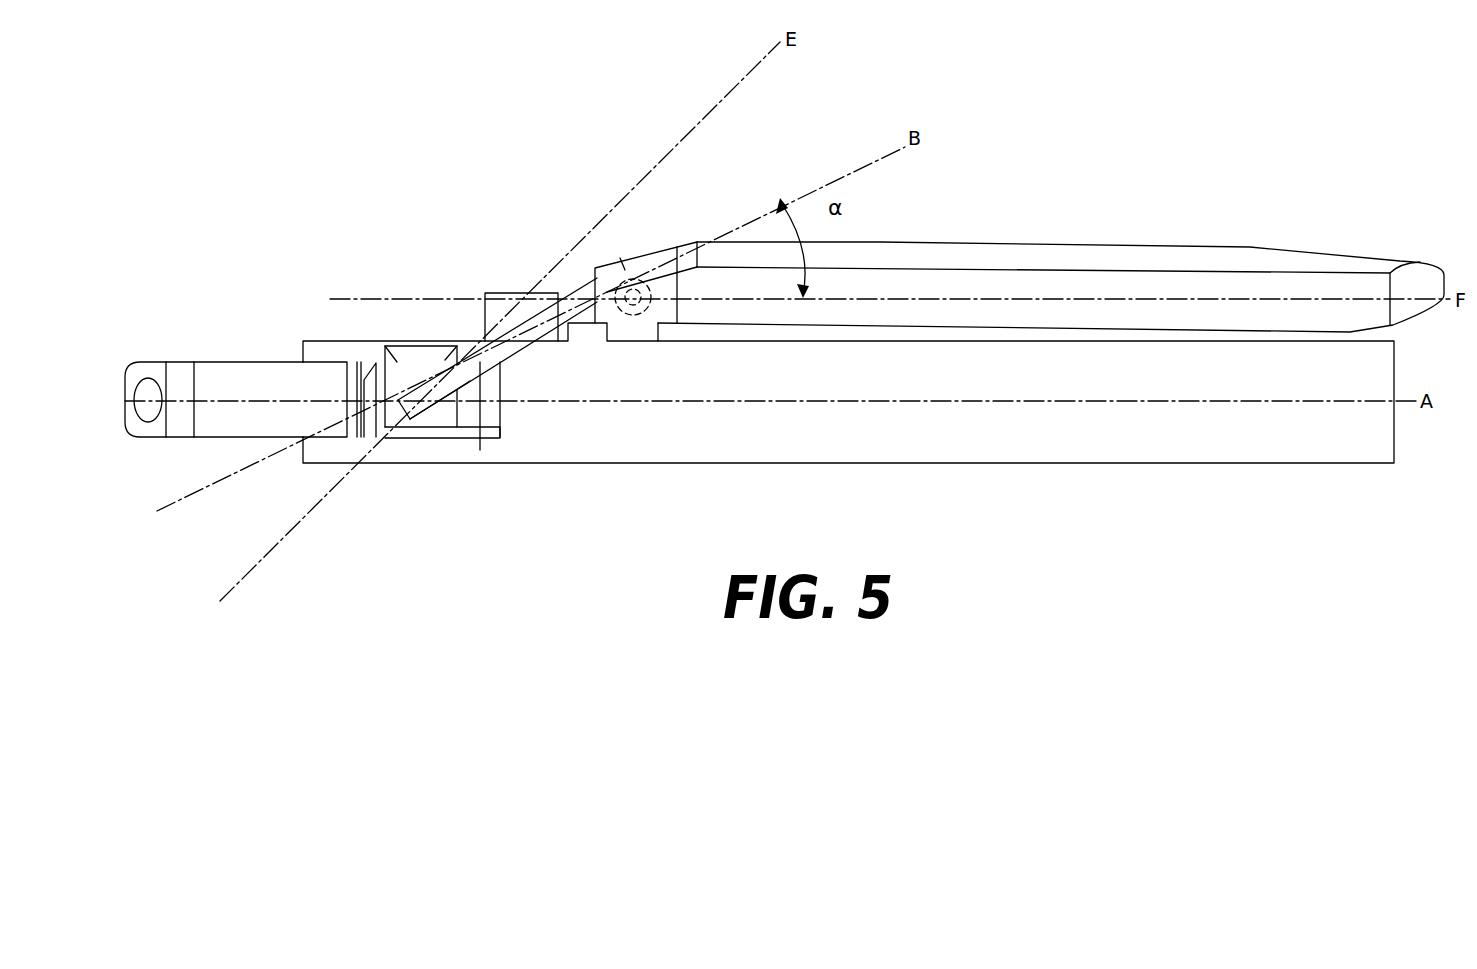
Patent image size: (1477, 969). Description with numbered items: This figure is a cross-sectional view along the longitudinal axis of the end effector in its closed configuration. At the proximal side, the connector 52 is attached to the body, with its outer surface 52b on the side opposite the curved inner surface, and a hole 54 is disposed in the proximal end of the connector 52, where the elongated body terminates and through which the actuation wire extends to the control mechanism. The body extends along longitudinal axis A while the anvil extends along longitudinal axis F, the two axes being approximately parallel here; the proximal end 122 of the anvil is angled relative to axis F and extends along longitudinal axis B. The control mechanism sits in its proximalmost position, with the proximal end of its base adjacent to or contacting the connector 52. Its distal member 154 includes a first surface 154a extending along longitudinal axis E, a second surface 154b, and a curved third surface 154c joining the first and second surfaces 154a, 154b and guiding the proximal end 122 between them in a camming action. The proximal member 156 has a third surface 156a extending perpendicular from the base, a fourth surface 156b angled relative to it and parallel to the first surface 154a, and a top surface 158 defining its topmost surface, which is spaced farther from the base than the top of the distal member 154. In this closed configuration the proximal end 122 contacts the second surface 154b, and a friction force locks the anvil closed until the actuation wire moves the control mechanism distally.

The connector 52 is at (221, 342).
The outer surface 52b is at (247, 375).
The hole 54 is at (143, 387).
The proximal end 122 is at (527, 293).
The distal member 154 is at (488, 415).
The first surface 154a is at (433, 415).
The second surface 154b is at (490, 362).
The third surface 154c is at (480, 450).
The proximal member 156 is at (392, 346).
The third surface 156a is at (400, 415).
The fourth surface 156b is at (435, 346).
The top surface 158 is at (407, 341).